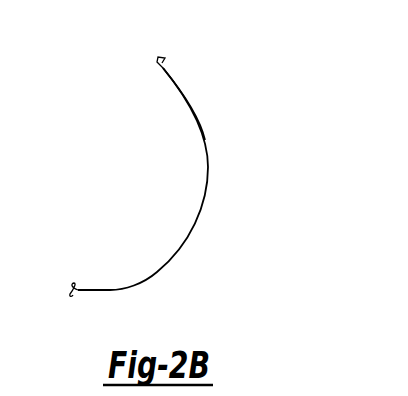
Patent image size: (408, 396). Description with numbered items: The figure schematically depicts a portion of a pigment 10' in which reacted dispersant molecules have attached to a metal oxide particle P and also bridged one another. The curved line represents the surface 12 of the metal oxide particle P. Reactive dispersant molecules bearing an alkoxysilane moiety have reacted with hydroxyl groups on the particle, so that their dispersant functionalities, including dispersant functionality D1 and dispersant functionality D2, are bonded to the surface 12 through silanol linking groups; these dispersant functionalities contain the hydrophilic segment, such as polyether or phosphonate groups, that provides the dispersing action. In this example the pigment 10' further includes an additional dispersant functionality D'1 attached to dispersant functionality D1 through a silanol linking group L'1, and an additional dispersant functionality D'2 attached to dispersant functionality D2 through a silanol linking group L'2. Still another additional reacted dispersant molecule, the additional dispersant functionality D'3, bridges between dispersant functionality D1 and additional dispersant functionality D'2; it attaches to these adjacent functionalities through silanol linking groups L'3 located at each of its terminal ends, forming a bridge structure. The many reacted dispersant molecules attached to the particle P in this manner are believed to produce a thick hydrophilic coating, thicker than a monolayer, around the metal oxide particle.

The pigment 10' is at (129, 160).
The particle surface 12 is at (202, 108).
The metal oxide particle P is at (180, 180).
The dispersant functionality D1 is at (229, 130).
The silanol linking group L'1 is at (276, 133).
The additional dispersant functionality D'1 is at (302, 133).
The silanol linking groups L'3 is at (255, 200).
The additional dispersant functionality D'3 is at (255, 195).
The dispersant functionality D2 is at (178, 272).
The silanol linking group L'2 is at (228, 276).
The additional dispersant functionality D'2 is at (254, 276).